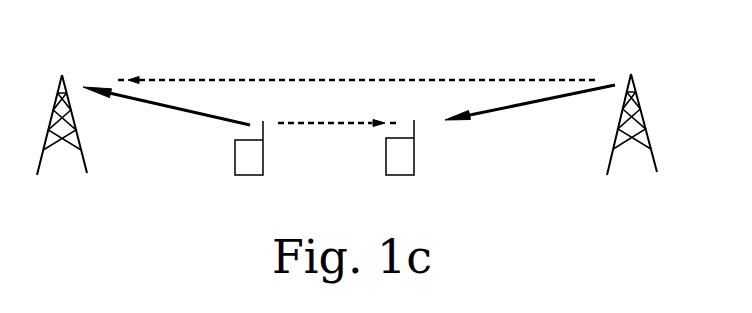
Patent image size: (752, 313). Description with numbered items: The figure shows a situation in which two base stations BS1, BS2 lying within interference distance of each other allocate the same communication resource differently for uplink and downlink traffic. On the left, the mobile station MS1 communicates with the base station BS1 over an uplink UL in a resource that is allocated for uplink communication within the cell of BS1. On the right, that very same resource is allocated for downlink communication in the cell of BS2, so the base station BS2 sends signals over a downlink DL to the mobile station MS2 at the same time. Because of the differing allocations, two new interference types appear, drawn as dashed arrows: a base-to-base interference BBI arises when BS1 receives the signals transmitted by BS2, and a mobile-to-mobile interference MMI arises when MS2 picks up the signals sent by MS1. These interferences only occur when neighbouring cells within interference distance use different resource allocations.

The base station BS1 is at (64, 142).
The base station BS2 is at (636, 140).
The mobile station MS1 is at (259, 164).
The mobile station MS2 is at (414, 162).
The uplink communication UL is at (177, 110).
The downlink communication DL is at (522, 108).
The mobile-to-mobile interference MMI is at (290, 123).
The base-to-base interference BBI is at (403, 80).